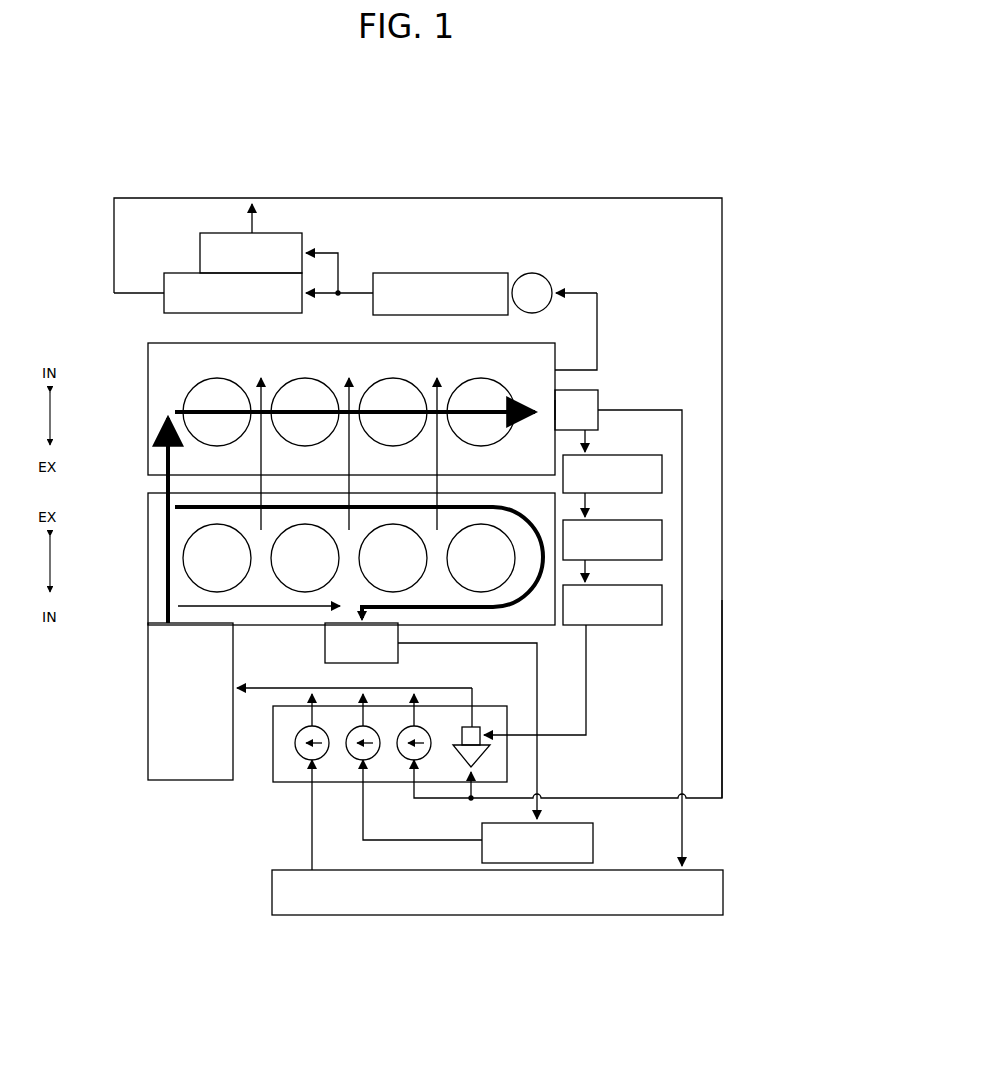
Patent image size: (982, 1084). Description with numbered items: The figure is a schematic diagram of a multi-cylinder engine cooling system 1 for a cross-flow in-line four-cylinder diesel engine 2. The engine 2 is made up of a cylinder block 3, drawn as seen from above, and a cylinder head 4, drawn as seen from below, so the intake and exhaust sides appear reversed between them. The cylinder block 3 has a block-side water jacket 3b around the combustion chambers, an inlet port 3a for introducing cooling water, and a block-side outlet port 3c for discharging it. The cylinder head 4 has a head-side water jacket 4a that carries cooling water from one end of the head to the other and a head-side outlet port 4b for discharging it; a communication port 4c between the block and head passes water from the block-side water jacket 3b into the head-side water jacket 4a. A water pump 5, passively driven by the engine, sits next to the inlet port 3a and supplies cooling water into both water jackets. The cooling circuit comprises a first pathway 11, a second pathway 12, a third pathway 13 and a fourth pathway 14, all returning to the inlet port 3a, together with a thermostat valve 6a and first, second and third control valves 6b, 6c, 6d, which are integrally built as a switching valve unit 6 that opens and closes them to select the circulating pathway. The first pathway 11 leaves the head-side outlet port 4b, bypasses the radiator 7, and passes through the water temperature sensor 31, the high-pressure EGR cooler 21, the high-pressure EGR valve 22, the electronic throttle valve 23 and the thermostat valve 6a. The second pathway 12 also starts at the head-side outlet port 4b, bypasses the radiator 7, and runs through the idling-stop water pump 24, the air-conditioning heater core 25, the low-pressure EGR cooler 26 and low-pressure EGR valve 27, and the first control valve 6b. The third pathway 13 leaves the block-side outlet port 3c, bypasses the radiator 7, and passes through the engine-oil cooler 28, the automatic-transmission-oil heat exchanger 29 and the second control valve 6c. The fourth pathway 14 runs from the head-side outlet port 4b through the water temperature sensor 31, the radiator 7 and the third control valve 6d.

The multi-cylinder engine cooling system 1 is at (642, 160).
The multi-cylinder engine 2 is at (102, 452).
The cylinder block 3 is at (148, 538).
The inlet port 3a is at (168, 620).
The block-side water jacket 3b is at (466, 506).
The block-side outlet port 3c is at (358, 614).
The cylinder head 4 is at (148, 468).
The head-side water jacket 4a is at (395, 410).
The head-side outlet port 4b is at (560, 398).
The communication port 4c is at (172, 482).
The water pump 5 is at (156, 698).
The switching valve unit 6 is at (490, 706).
The thermostat valve 6a is at (482, 756).
The first control valve 6b is at (420, 760).
The second control valve 6c is at (369, 760).
The third control valve 6d is at (318, 760).
The radiator 7 is at (700, 870).
The first pathway 11 is at (586, 683).
The second pathway 12 is at (722, 683).
The third pathway 13 is at (537, 683).
The fourth pathway 14 is at (700, 683).
The high-pressure EGR cooler 21 is at (640, 455).
The high-pressure EGR valve 22 is at (632, 520).
The electronic throttle valve 23 is at (632, 585).
The idling-stop water pump 24 is at (548, 275).
The air-conditioning heater core 25 is at (474, 273).
The low-pressure EGR cooler 26 is at (282, 313).
The low-pressure EGR valve 27 is at (287, 232).
The engine-oil cooler 28 is at (398, 652).
The automatic-transmission-oil heat exchanger 29 is at (593, 843).
The water temperature sensor 31 is at (600, 405).